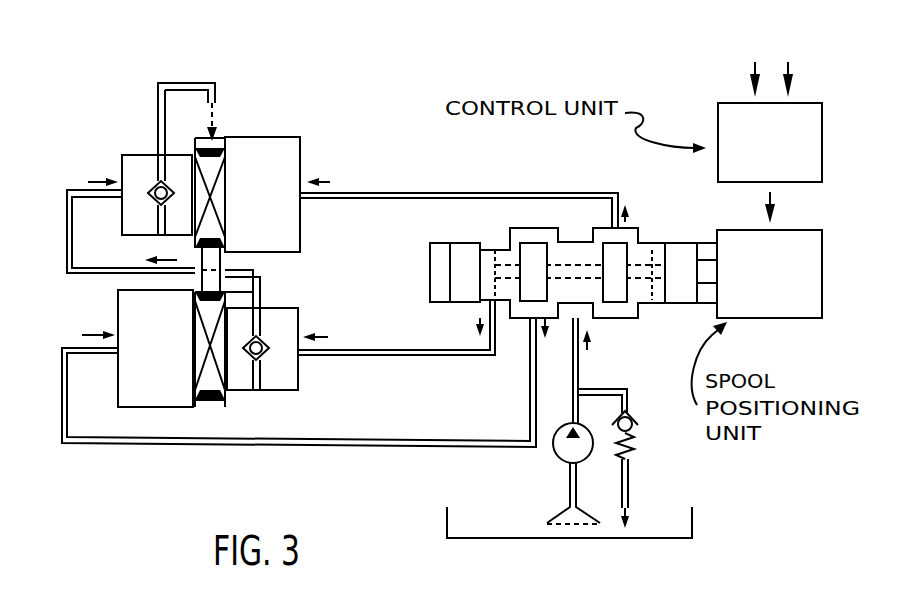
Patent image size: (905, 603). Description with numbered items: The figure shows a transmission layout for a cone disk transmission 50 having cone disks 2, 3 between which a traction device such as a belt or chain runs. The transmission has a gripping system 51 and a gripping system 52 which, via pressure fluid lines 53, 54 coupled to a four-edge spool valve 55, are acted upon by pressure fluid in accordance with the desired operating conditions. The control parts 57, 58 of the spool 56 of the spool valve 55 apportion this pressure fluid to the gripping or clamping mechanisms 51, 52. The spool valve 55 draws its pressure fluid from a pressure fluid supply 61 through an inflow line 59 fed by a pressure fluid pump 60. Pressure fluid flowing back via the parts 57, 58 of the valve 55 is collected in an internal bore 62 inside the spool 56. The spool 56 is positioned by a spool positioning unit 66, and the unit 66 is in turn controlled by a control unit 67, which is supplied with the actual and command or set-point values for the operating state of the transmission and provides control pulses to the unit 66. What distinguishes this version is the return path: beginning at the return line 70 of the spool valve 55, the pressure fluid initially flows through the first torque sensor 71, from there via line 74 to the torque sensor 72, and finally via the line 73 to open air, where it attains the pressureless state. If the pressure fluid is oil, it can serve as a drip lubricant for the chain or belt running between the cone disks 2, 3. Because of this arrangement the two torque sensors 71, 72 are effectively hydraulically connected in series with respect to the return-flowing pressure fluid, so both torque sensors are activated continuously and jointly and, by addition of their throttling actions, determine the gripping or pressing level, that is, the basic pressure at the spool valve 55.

The cone disk 2 is at (221, 190).
The cone disk 3 is at (197, 342).
The cone disk transmission 50 is at (282, 279).
The gripping system 51 is at (280, 170).
The gripping system 52 is at (153, 395).
The pressure fluid line 53 is at (405, 192).
The pressure fluid line 54 is at (222, 442).
The four-edge spool valve 55 is at (414, 286).
The spool 56 is at (578, 280).
The control part 57 is at (537, 247).
The control part 58 is at (625, 252).
The inflow line 59 is at (580, 367).
The pressure fluid pump 60 is at (567, 452).
The pressure fluid supply 61 is at (483, 517).
The internal bore 62 is at (502, 255).
The spool positioning unit 66 is at (730, 238).
The control unit 67 is at (728, 142).
The return line 70 is at (443, 357).
The first torque sensor 71 is at (292, 373).
The torque sensor 72 is at (137, 160).
The line 73 is at (190, 83).
The line 74 is at (77, 232).